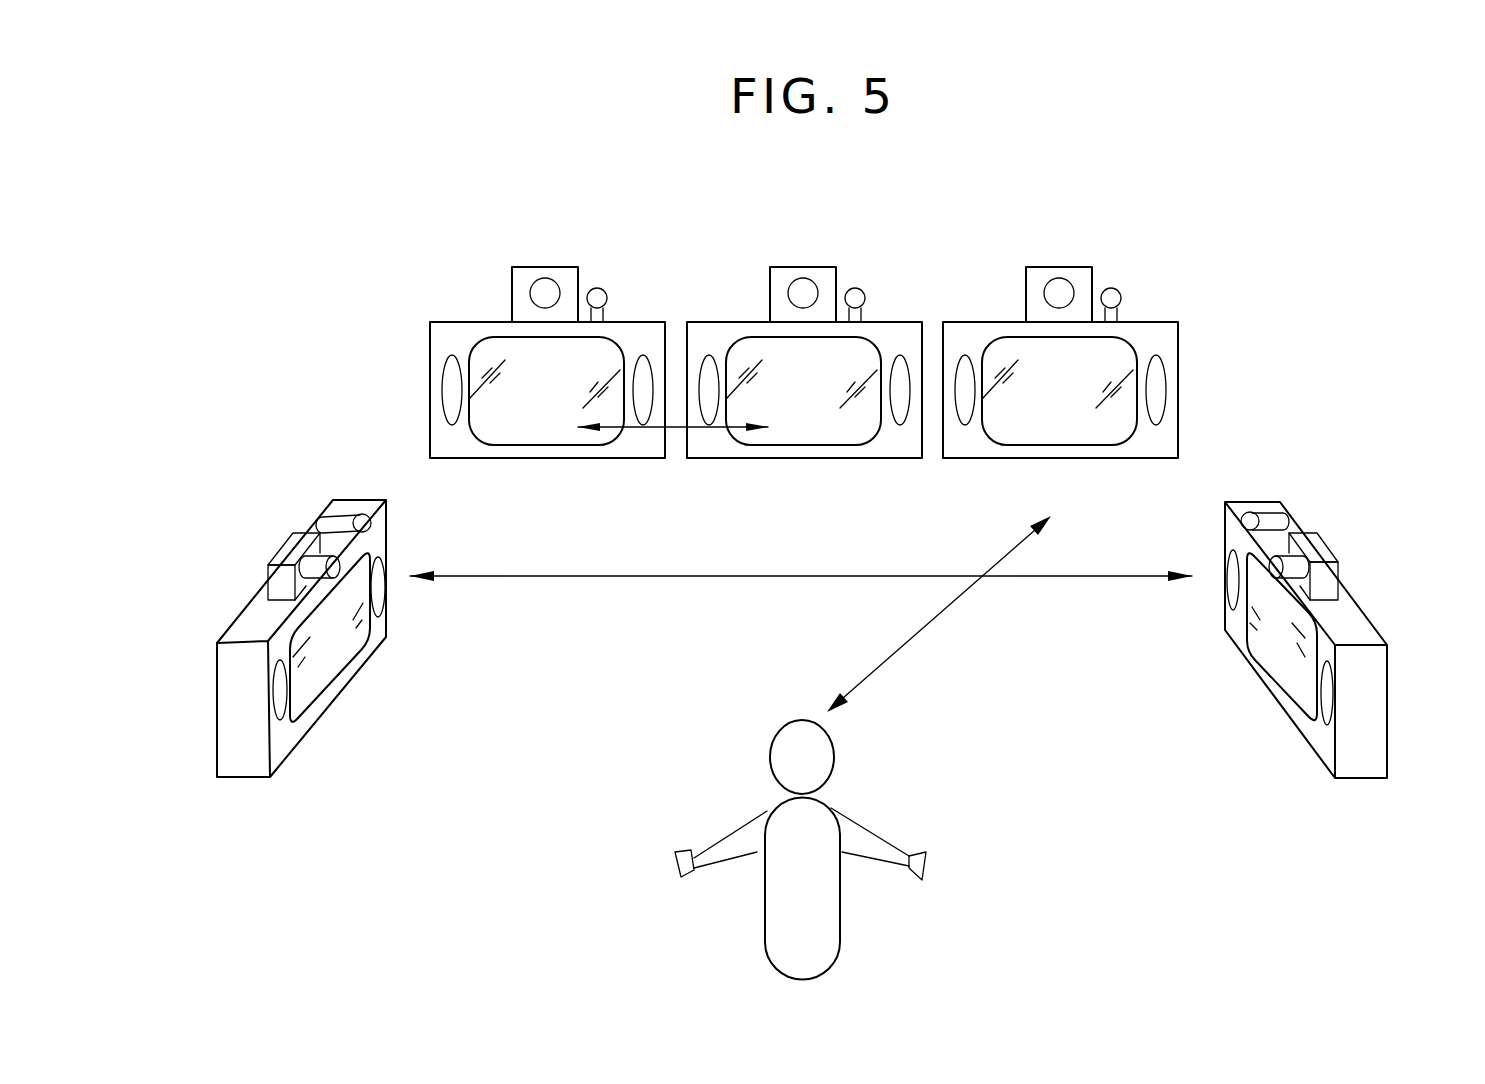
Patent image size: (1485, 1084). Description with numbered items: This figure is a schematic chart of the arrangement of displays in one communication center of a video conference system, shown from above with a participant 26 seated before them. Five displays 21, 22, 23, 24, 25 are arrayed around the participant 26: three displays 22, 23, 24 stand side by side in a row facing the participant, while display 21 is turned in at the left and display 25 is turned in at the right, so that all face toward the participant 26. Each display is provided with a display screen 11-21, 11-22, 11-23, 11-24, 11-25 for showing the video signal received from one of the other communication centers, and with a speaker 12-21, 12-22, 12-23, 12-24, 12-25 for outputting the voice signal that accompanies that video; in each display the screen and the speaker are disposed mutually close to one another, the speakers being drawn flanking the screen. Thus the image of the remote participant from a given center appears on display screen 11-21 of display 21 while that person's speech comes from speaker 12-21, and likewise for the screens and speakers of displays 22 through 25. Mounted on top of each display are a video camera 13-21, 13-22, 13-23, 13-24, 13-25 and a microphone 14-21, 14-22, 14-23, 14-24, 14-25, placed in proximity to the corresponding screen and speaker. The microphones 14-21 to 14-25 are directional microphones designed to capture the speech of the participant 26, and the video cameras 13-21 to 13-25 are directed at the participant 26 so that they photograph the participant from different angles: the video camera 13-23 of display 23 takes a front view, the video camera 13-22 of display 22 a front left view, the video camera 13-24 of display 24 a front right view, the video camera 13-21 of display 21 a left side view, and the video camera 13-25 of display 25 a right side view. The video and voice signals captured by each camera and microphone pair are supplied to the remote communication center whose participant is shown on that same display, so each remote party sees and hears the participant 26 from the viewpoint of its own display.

The display 21 is at (348, 488).
The display 22 is at (463, 305).
The display 23 is at (751, 305).
The display 24 is at (1009, 305).
The display 25 is at (1245, 488).
The display screen 11-21 is at (333, 657).
The display screen 11-22 is at (563, 430).
The display screen 11-23 is at (848, 430).
The display screen 11-24 is at (1090, 438).
The display screen 11-25 is at (1273, 653).
The speaker 12-21 is at (287, 733).
The speaker 12-22 is at (452, 417).
The speaker 12-23 is at (712, 417).
The speaker 12-24 is at (962, 417).
The speaker 12-25 is at (1323, 717).
The video camera 13-21 is at (272, 552).
The video camera 13-22 is at (556, 262).
The video camera 13-23 is at (803, 262).
The video camera 13-24 is at (1068, 262).
The video camera 13-25 is at (1323, 550).
The microphone 14-21 is at (324, 522).
The microphone 14-22 is at (600, 294).
The microphone 14-23 is at (858, 294).
The microphone 14-24 is at (1114, 294).
The microphone 14-25 is at (1270, 517).
The participant 26 is at (831, 924).